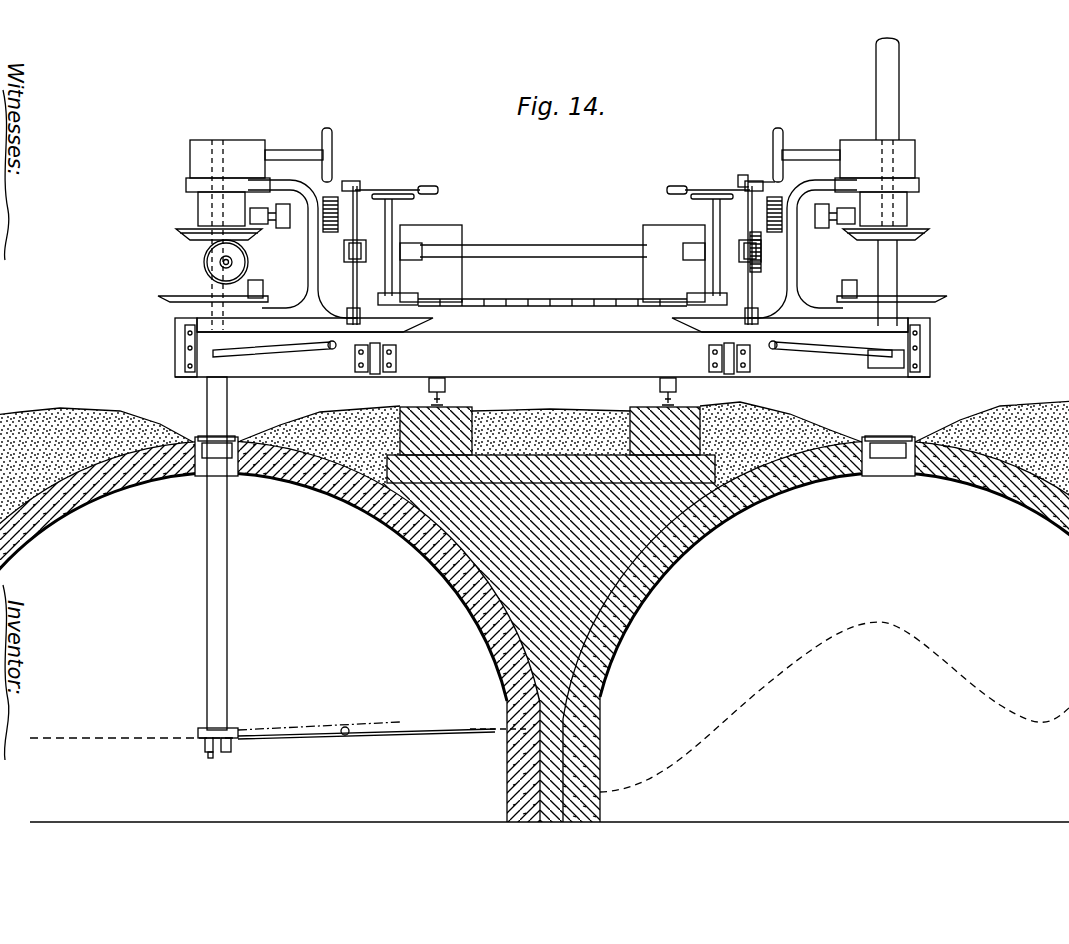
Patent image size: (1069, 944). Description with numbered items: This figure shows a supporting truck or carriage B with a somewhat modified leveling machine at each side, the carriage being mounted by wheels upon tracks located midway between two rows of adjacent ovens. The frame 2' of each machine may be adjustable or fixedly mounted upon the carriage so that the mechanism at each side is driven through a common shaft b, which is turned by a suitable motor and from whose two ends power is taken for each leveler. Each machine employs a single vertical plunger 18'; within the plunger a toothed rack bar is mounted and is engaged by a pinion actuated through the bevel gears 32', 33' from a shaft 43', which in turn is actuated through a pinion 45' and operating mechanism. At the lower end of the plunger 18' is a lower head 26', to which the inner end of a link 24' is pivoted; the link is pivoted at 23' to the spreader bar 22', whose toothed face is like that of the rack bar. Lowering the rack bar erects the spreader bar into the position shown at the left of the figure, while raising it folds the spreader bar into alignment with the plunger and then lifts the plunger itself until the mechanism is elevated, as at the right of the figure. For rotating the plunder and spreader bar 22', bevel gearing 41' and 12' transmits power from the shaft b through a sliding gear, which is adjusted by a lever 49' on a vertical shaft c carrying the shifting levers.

The vertical plunger 18' is at (572, 384).
The frame 2' is at (552, 253).
The vertical shaft c is at (552, 253).
The lever 49' is at (552, 181).
The pinion 45' is at (756, 209).
The common shaft b is at (561, 246).
The truck or carriage B is at (552, 347).
The bevel gear 33' is at (552, 243).
The bevel gear 32' is at (241, 262).
The shaft 43' is at (552, 225).
The bevel gearing 41' is at (554, 277).
The bevel gearing 12' is at (550, 292).
The spreader bar 22' is at (384, 715).
The pivot 23' is at (347, 716).
The link 24' is at (167, 746).
The lower head 26' is at (199, 743).